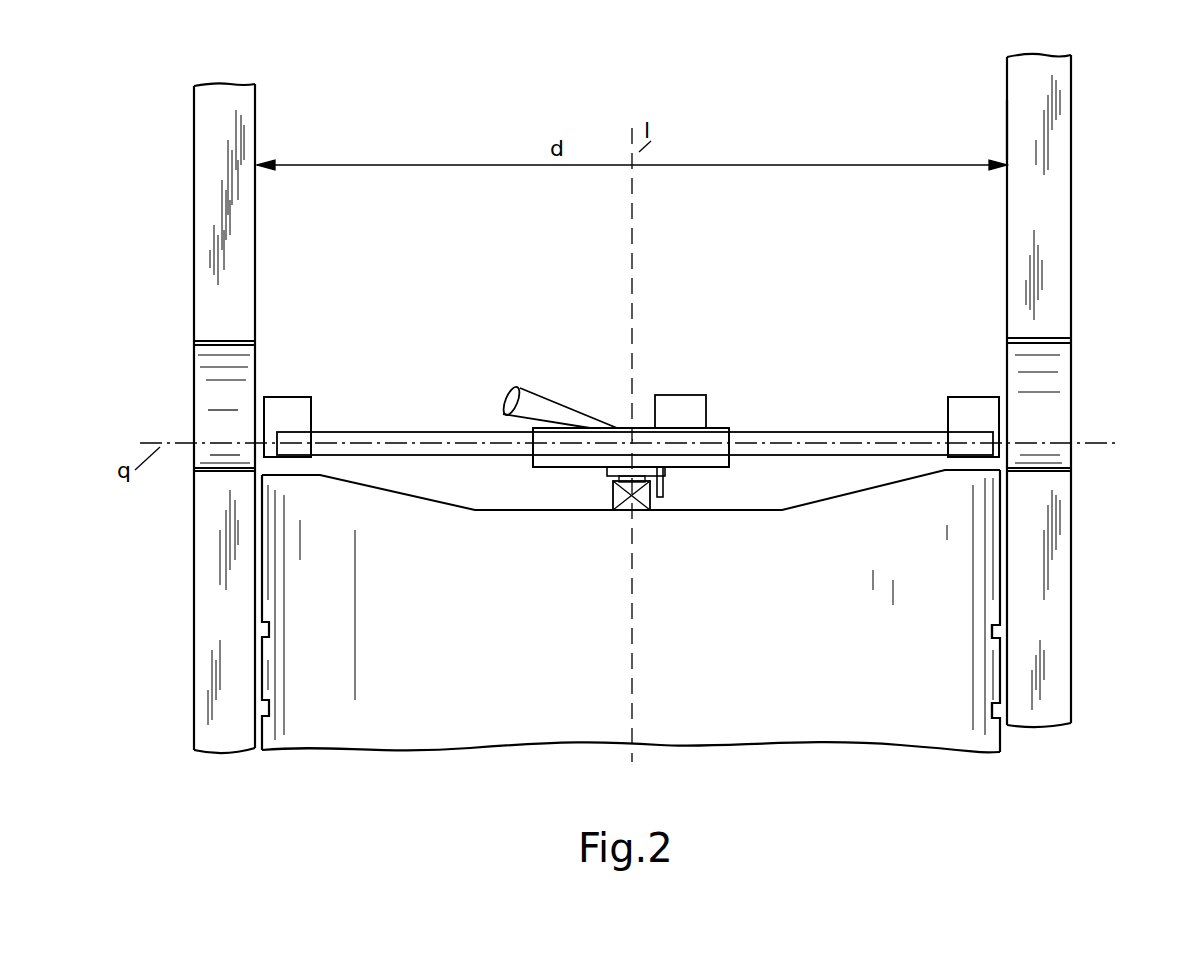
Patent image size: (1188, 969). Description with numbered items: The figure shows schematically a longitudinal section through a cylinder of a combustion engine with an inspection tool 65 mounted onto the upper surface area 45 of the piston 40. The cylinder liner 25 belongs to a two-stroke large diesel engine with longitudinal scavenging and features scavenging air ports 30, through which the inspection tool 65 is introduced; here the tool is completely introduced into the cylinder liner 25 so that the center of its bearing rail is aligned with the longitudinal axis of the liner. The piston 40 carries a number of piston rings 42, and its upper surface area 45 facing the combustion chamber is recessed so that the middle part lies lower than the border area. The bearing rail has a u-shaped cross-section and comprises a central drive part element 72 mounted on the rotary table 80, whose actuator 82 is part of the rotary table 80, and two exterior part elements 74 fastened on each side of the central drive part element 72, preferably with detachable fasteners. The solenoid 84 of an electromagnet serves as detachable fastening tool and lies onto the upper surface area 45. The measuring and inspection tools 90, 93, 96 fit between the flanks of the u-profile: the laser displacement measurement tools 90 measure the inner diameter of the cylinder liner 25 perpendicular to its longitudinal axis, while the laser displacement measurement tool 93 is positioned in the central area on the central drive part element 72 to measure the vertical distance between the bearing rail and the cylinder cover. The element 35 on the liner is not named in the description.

The cylinder liner 25 is at (1045, 193).
The inner post face 35 is at (1006, 124).
The scavenging air ports 30 is at (1045, 404).
The piston 40 is at (935, 578).
The piston rings 42 is at (997, 712).
The upper surface area of the piston 45 is at (385, 493).
The inspection tool 65 is at (412, 339).
The central drive part element 72 is at (577, 457).
The exterior part elements 74 is at (410, 440).
The rotary table 80 is at (701, 516).
The actuator 82 is at (665, 493).
The solenoid 84 is at (632, 500).
The laser displacement measurement tools 90 is at (268, 415).
The laser displacement measurement tool 93 is at (695, 405).
The measuring and inspection tool 96 is at (530, 405).